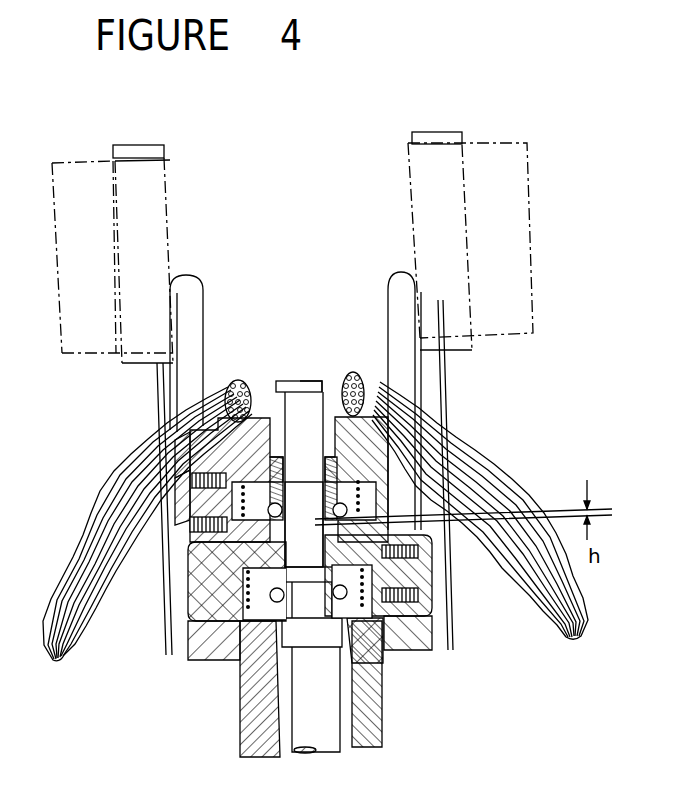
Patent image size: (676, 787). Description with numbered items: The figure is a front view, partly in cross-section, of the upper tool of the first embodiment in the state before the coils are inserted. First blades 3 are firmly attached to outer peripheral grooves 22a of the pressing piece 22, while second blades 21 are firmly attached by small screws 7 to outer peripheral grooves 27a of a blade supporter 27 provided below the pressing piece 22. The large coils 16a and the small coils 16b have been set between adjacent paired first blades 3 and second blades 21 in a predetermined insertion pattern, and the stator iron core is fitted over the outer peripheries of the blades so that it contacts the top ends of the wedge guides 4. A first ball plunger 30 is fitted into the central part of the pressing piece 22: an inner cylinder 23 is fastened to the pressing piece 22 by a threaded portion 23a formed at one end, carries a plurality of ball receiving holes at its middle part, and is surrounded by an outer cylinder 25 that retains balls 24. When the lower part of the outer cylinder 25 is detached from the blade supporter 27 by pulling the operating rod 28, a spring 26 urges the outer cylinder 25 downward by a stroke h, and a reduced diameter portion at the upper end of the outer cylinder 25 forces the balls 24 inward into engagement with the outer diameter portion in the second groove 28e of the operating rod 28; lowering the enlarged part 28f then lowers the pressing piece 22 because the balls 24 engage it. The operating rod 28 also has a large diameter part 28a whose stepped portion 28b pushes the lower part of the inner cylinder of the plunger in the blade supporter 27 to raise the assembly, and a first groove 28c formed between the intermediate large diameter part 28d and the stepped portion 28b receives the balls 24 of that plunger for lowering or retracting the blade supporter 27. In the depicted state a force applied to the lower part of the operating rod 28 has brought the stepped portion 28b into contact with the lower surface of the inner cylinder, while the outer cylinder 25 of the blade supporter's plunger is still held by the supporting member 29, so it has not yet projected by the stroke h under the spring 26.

The first blades 3 is at (198, 296).
The second blades 21 is at (382, 300).
The wedge guides 4 is at (440, 362).
The small screws 7 is at (353, 610).
The large coils 16a is at (240, 380).
The small coils 16b is at (97, 520).
The pressing piece 22 is at (352, 440).
The outer peripheral grooves 22a is at (200, 495).
The inner cylinder 23 is at (265, 585).
The threaded portion 23a is at (270, 490).
The balls 24 is at (262, 478).
The outer cylinder 25 is at (250, 570).
The spring 26 is at (348, 512).
The blade supporter 27 is at (235, 560).
The outer peripheral grooves 27a is at (398, 590).
The operating rod 28 is at (340, 728).
The large diameter part 28a is at (250, 720).
The stepped portion 28b is at (272, 640).
The first groove 28c is at (366, 680).
The intermediate large diameter part 28d is at (220, 623).
The second groove 28e is at (266, 388).
The enlarged part 28f is at (310, 382).
The supporting member 29 is at (245, 695).
The first ball plunger 30 is at (355, 467).